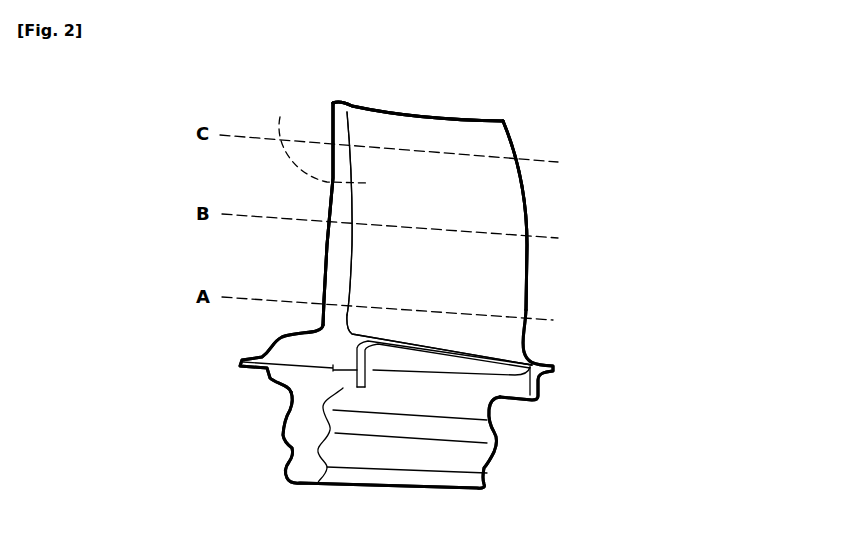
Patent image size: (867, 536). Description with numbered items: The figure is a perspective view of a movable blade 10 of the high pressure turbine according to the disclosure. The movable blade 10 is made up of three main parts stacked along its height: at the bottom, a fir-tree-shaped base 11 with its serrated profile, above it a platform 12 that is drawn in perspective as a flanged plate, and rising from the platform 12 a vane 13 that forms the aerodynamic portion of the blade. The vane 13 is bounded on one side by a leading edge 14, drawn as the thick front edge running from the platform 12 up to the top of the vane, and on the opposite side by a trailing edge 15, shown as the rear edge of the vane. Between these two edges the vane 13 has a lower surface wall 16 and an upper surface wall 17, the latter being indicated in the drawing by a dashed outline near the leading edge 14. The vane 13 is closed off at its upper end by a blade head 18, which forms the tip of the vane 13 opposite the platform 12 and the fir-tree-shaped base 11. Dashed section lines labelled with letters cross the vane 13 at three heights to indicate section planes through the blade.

The movable blade 10 is at (607, 197).
The fir-tree-shaped base 11 is at (298, 427).
The platform 12 is at (547, 363).
The vane 13 is at (545, 275).
The leading edge 14 is at (325, 262).
The trailing edge 15 is at (527, 192).
The lower surface wall 16 is at (428, 165).
The upper surface wall 17 is at (317, 136).
The blade head 18 is at (385, 112).